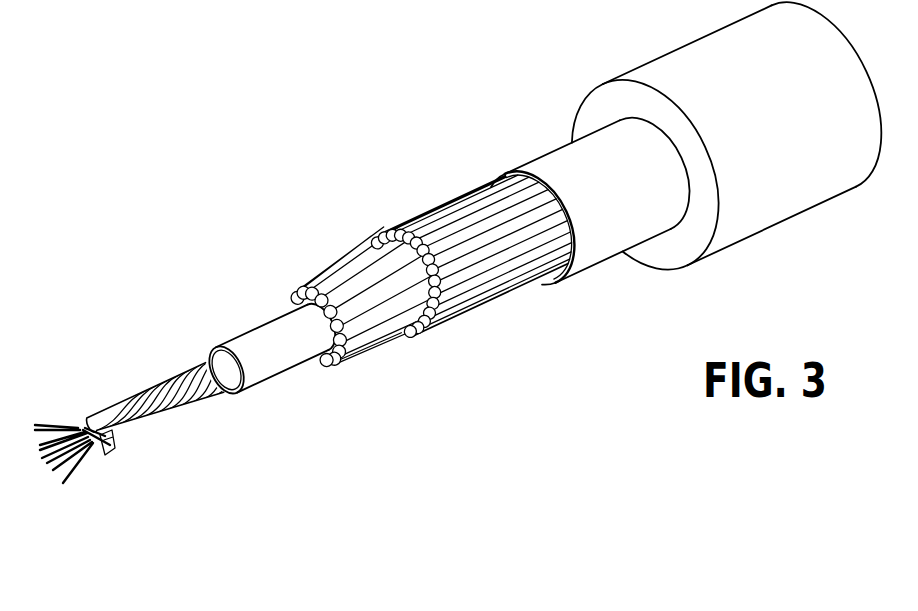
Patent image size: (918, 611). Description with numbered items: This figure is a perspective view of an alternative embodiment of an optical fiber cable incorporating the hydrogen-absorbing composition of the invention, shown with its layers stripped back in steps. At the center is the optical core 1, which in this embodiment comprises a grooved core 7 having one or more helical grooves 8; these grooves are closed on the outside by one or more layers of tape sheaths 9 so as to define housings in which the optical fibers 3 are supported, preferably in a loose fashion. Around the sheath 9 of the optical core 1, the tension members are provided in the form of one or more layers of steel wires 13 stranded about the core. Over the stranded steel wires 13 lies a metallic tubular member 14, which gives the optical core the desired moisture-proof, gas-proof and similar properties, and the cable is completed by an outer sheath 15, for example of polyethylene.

The optical core 1 is at (440, 140).
The optical fibers 3 is at (47, 423).
The grooved core 7 is at (163, 410).
The helical grooves 8 is at (110, 447).
The tape sheaths 9 is at (273, 362).
The steel wires 13 is at (365, 333).
The metallic tubular member 14 is at (603, 233).
The outer sheath 15 is at (775, 199).